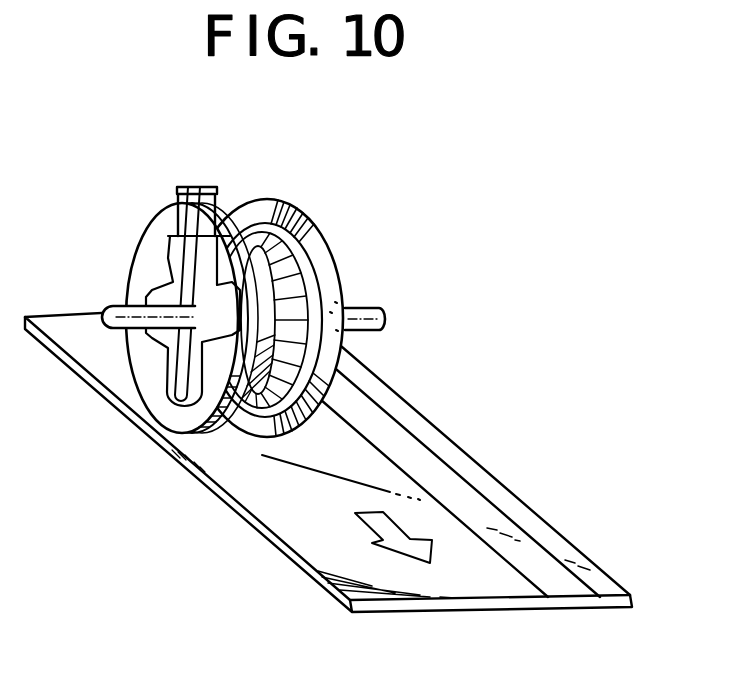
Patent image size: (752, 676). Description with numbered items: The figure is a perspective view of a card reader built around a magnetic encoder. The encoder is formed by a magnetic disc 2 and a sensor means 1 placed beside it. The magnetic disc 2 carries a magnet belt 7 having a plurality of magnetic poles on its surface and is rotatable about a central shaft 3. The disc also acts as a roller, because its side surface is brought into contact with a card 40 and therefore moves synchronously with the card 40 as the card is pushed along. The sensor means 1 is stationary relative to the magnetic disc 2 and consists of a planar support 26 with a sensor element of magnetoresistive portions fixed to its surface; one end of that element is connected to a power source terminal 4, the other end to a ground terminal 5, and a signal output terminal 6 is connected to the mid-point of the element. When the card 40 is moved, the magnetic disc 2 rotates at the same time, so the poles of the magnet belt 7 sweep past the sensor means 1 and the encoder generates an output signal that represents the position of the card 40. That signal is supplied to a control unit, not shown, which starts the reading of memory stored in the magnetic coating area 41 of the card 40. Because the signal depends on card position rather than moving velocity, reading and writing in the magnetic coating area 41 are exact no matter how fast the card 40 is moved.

The sensor means 1 is at (161, 279).
The magnetic disc 2 is at (303, 310).
The central shaft 3 is at (367, 333).
The power source terminal 4 is at (212, 190).
The ground terminal 5 is at (193, 186).
The signal output terminal 6 is at (180, 188).
The magnet belt 7 is at (317, 230).
The planar support 26 is at (162, 243).
The card 40 is at (493, 483).
The magnetic coating area 41 is at (523, 553).